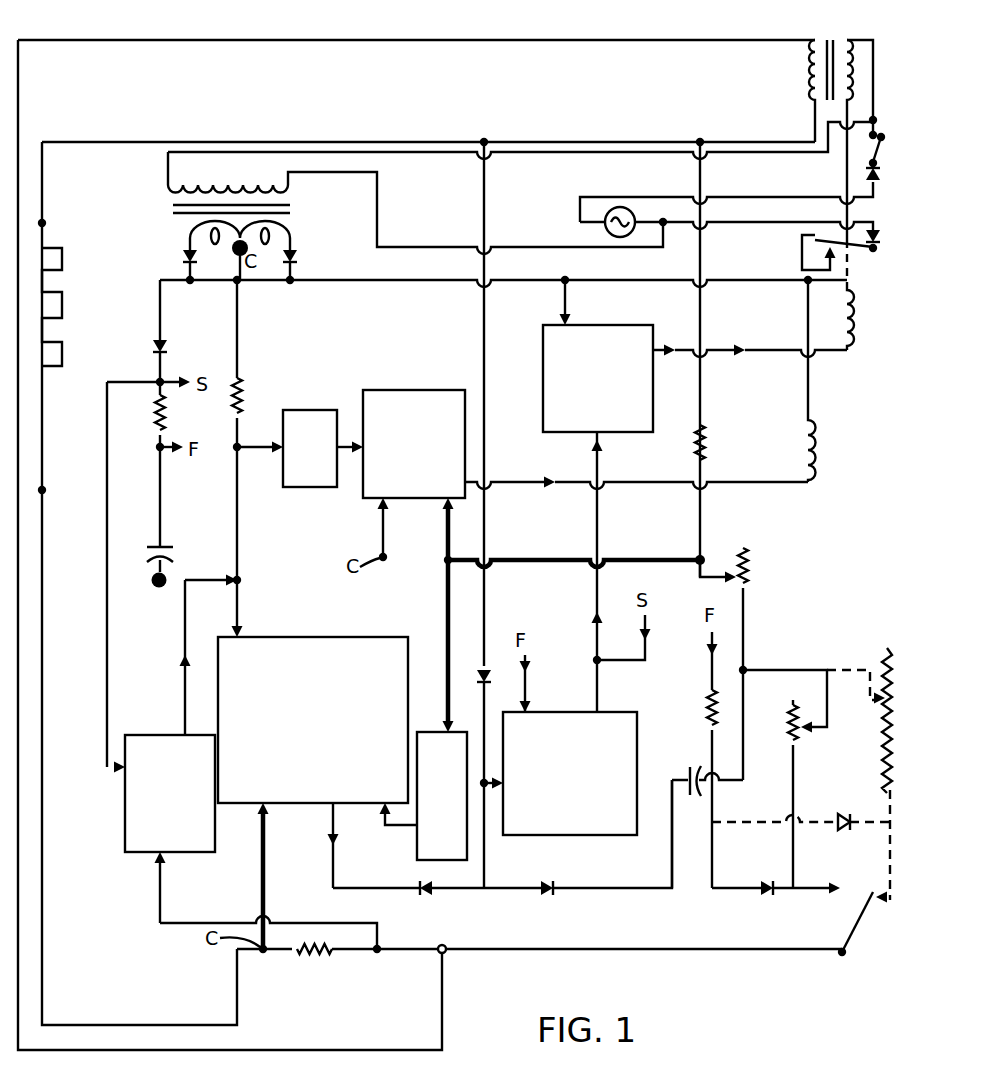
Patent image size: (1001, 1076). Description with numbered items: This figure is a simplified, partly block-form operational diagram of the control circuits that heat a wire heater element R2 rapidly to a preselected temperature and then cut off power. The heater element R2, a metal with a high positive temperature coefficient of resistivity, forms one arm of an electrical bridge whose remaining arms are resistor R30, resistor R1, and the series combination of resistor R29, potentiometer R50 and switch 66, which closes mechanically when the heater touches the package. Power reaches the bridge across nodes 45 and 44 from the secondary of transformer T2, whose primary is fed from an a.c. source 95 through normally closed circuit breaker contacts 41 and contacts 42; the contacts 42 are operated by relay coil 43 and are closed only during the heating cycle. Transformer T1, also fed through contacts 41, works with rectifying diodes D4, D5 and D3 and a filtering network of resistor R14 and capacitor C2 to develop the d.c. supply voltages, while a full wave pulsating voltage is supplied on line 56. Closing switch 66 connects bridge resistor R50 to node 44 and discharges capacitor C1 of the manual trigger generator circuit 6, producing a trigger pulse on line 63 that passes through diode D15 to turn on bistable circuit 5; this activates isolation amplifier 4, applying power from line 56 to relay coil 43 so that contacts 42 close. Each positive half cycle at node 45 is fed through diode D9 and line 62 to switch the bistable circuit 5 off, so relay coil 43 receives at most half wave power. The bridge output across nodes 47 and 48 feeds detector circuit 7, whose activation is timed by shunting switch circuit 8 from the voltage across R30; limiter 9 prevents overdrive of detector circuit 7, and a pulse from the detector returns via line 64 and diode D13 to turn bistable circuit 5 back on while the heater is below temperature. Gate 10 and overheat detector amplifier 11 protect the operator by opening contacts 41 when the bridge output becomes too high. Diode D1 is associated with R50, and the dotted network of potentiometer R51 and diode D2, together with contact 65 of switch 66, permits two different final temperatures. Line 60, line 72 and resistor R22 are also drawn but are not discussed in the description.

The isolation amplifier 4 is at (598, 325).
The bistable circuit 5 is at (620, 712).
The manual trigger generator circuit 6 is at (802, 746).
The detector circuit 7 is at (344, 637).
The shunting switch circuit 8 is at (163, 735).
The limiter 9 is at (430, 732).
The gate 10 is at (317, 410).
The overheat detector amplifier 11 is at (406, 390).
The circuit breaker contacts 41 is at (874, 150).
The contacts 42 is at (802, 250).
The relay coil 43 is at (850, 322).
The bridge node 44 is at (446, 946).
The bridge node 45 is at (700, 142).
The bridge output node 47 is at (264, 953).
The bridge output node 48 is at (704, 558).
The line 56 is at (672, 281).
The conductor 60 is at (237, 532).
The line 62 is at (482, 712).
The line 63 is at (672, 862).
The line 64 is at (333, 878).
The contact 65 is at (838, 886).
The switch 66 is at (858, 926).
The conductor 72 is at (160, 893).
The a.c. source 95 is at (621, 207).
The transformer T1 is at (415, 216).
The transformer T2 is at (841, 123).
The bridge resistor R1 is at (705, 440).
The heater element R2 is at (62, 272).
The resistor R14 is at (158, 413).
The resistor R22 is at (708, 710).
The bridge resistor R29 is at (749, 569).
The bridge resistor R30 is at (318, 966).
The potentiometer R50 is at (815, 794).
The potentiometer R51 is at (874, 710).
The capacitor C1 is at (694, 768).
The capacitor C2 is at (168, 558).
The diode D1 is at (772, 892).
The diode D2 is at (847, 818).
The rectifying diode D3 is at (163, 343).
The rectifying diode D4 is at (184, 258).
The rectifying diode D5 is at (293, 257).
The diode D9 is at (488, 668).
The diode D13 is at (425, 892).
The diode D15 is at (551, 893).